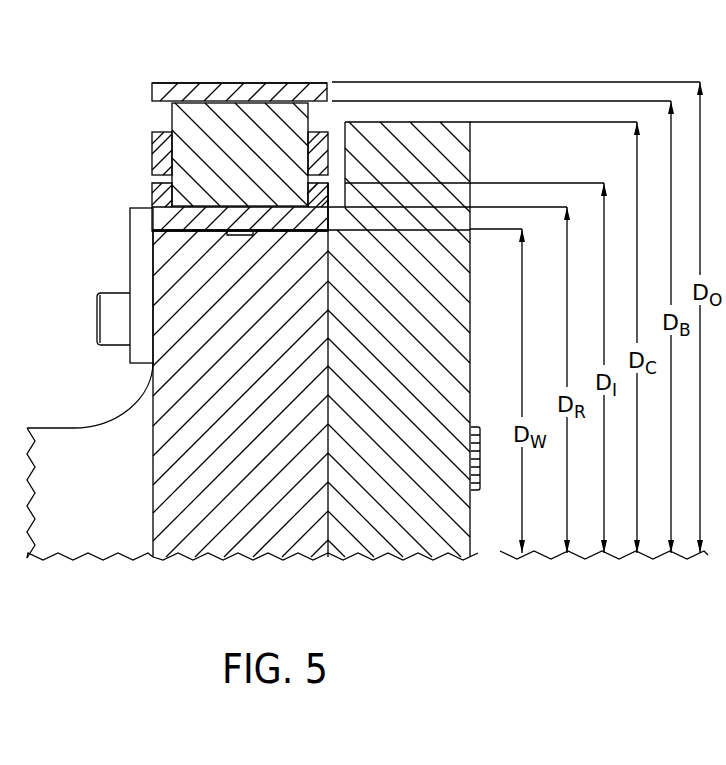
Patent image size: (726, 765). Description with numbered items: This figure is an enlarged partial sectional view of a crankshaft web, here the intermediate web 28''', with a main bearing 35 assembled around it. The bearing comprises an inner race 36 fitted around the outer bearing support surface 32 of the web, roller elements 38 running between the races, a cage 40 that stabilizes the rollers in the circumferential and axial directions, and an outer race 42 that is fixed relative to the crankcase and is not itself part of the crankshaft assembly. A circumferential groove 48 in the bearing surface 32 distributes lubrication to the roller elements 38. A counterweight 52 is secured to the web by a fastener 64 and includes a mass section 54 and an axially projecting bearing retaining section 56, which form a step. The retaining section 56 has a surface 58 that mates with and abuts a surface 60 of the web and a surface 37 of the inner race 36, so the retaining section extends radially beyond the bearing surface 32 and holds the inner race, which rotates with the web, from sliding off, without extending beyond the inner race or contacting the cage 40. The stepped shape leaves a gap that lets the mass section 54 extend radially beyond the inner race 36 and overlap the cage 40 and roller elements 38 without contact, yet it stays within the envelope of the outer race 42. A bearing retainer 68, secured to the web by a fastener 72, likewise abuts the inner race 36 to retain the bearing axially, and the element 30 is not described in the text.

The intermediate web 28''' is at (284, 395).
The housing 30 is at (60, 424).
The outer bearing support surface 32 is at (183, 222).
The main bearing 35 is at (98, 110).
The inner race 36 is at (158, 198).
The surface of the inner race 37 is at (328, 222).
The roller elements 38 is at (243, 112).
The cage 40 is at (160, 156).
The outer race 42 is at (158, 93).
The circumferential groove 48 is at (240, 236).
The counterweight 52 is at (461, 104).
The mass section 54 is at (402, 120).
The bearing retaining section 56 is at (333, 196).
The surface of the bearing retaining section 58 is at (328, 406).
The surface of the web 60 is at (330, 368).
The fastener 64 is at (478, 470).
The bearing retainer 68 is at (136, 238).
The fastener 72 is at (100, 316).